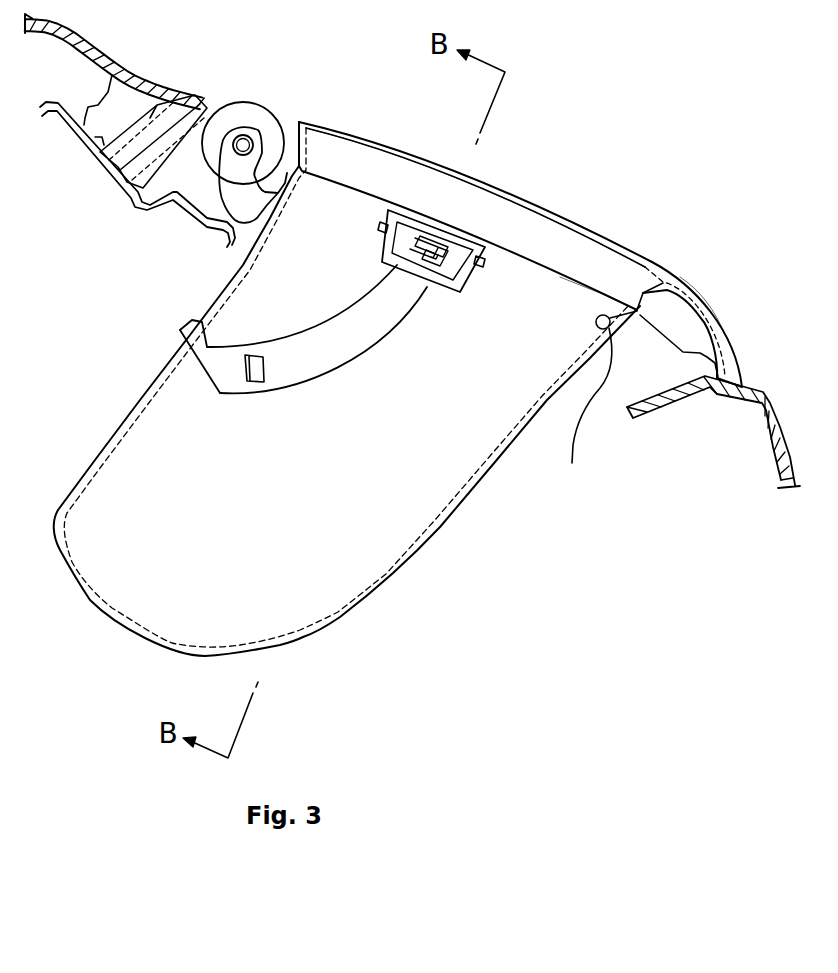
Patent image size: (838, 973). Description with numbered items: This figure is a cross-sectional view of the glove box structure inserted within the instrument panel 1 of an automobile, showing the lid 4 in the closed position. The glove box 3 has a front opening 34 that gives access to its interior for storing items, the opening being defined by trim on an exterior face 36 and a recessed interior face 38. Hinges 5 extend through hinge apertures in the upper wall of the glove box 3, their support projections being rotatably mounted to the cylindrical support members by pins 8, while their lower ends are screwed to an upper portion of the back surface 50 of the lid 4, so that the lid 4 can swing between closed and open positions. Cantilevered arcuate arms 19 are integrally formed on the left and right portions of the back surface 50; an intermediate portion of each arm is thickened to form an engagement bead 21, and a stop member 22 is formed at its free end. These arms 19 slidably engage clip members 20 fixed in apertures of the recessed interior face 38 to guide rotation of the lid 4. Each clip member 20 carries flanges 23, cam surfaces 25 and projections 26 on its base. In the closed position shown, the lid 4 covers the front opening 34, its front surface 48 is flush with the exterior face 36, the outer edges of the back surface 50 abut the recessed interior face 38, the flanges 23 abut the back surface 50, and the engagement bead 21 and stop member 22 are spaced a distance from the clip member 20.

The instrument panel 1 is at (757, 407).
The glove box 3 is at (440, 527).
The lid 4 is at (532, 186).
The hinges 5 is at (250, 222).
The pins 8 is at (240, 135).
The cantilevered arcuate arms 19 is at (370, 342).
The clip members 20 is at (463, 289).
The engagement bead 21 is at (265, 372).
The stop member 22 is at (207, 332).
The flanges 23 is at (413, 210).
The cam surfaces 25 is at (428, 282).
The projections 26 is at (382, 228).
The front opening 34 is at (602, 404).
The exterior face 36 is at (693, 282).
The recessed interior face 38 is at (660, 257).
The front surface 48 is at (567, 218).
The back surface 50 is at (580, 283).